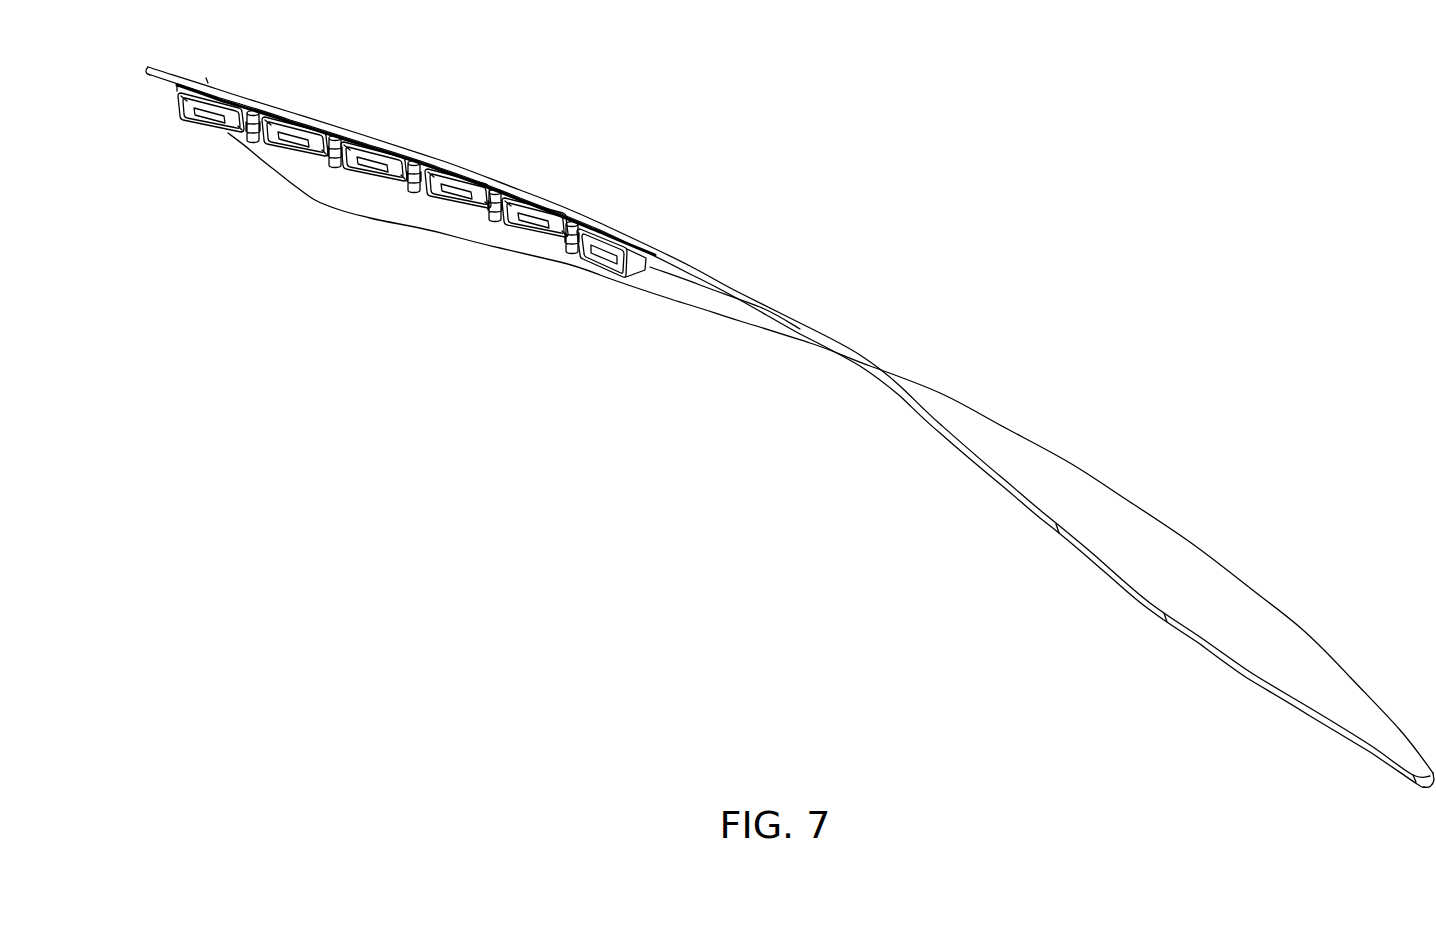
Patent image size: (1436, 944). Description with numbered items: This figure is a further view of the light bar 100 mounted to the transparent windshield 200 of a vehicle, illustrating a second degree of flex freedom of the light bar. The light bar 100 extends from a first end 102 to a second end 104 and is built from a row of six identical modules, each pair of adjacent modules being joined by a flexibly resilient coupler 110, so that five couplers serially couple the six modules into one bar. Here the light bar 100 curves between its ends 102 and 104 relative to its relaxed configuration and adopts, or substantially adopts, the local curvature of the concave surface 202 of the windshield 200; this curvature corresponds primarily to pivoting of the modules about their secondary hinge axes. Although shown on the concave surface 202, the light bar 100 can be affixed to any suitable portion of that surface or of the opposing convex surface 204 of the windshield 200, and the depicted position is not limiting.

The light bar 100 is at (173, 137).
The first end 102 is at (167, 104).
The second end 104 is at (643, 276).
The flexibly resilient coupler 110 is at (411, 197).
The windshield 200 is at (1243, 603).
The concave surface 202 is at (337, 192).
The convex surface 204 is at (972, 423).